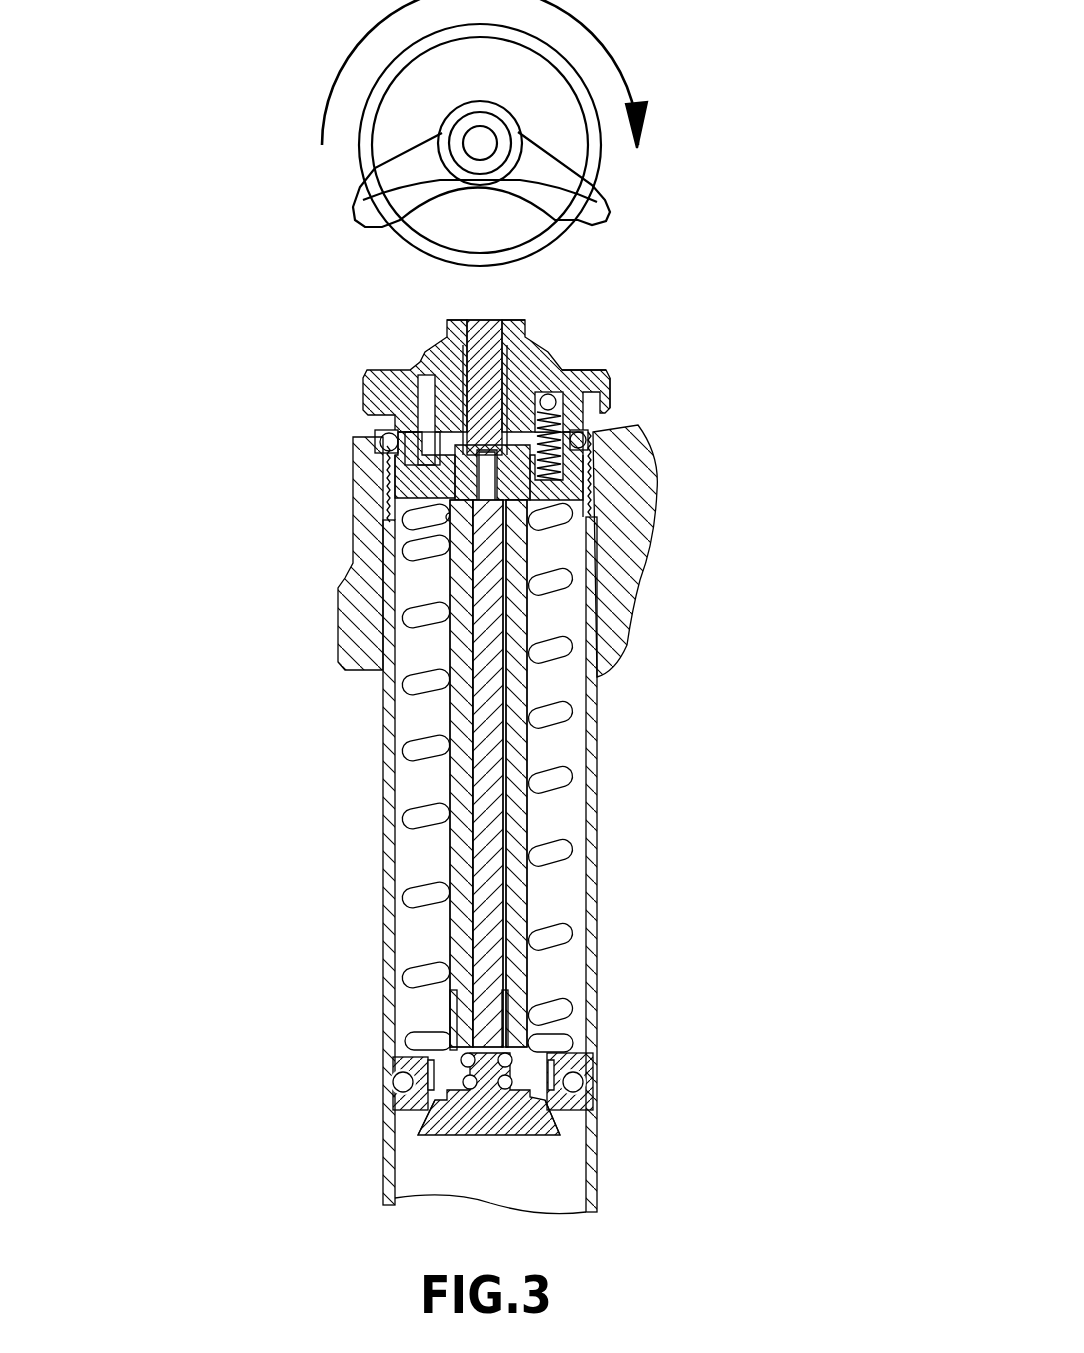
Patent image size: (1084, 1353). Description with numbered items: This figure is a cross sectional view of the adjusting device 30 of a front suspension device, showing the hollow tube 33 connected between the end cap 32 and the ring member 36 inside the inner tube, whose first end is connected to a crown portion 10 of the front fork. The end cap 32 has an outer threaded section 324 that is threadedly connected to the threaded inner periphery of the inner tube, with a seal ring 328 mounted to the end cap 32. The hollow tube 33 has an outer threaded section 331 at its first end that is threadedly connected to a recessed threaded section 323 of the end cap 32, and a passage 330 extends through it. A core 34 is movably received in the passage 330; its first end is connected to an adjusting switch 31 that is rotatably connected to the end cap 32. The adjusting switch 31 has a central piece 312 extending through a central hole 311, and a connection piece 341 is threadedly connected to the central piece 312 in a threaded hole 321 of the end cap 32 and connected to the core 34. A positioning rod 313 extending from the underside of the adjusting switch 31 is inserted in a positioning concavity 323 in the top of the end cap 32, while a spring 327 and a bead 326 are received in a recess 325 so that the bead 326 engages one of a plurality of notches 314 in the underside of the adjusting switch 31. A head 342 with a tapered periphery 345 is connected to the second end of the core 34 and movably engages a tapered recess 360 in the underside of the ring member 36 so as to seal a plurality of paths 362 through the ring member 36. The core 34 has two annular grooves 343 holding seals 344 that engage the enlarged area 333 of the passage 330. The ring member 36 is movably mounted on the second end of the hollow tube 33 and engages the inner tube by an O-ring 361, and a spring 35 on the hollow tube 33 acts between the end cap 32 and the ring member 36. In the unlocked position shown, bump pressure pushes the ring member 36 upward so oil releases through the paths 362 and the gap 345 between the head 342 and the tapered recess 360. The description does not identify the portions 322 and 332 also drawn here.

The crown portion 10 is at (610, 625).
The adjusting device 30 is at (552, 333).
The adjusting switch 31 is at (565, 117).
The central hole 311 is at (443, 320).
The central piece 312 is at (502, 318).
The positioning rod 313 is at (400, 383).
The notches 314 is at (553, 362).
The end cap 32 is at (612, 368).
The threaded hole 321 is at (382, 436).
The block 322 is at (620, 578).
The positioning concavity 323 is at (365, 400).
The outer threaded section 324 is at (548, 522).
The recess 325 is at (590, 430).
The bead 326 is at (600, 410).
The spring 327 is at (590, 480).
The seal ring 328 is at (593, 453).
The hollow tube 33 is at (400, 625).
The passage 330 is at (515, 835).
The outer threaded section 331 is at (397, 527).
The bearing seat 332 is at (585, 1092).
The enlarged area 333 is at (453, 1017).
The core 34 is at (487, 762).
The connection piece 341 is at (385, 462).
The head 342 is at (567, 1130).
The annular grooves 343 is at (458, 1058).
The seals 344 is at (507, 1058).
The tapered periphery 345 is at (417, 1130).
The spring 35 is at (405, 750).
The ring member 36 is at (583, 1105).
The tapered recess 360 is at (450, 1097).
The O-ring 361 is at (397, 1085).
The paths 362 is at (552, 1072).